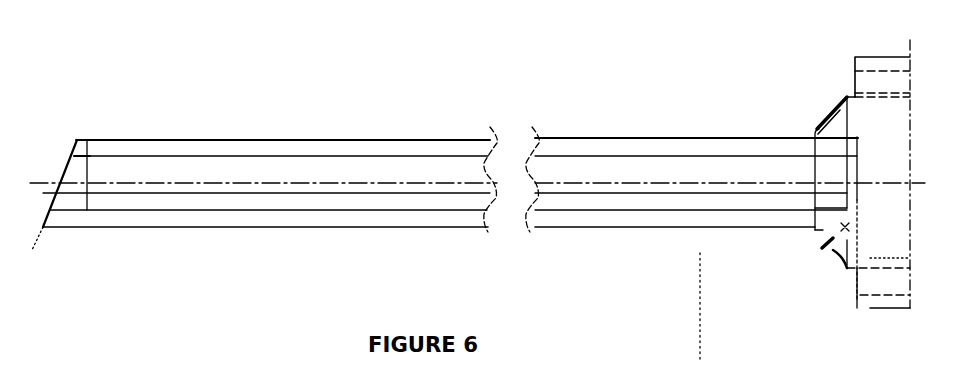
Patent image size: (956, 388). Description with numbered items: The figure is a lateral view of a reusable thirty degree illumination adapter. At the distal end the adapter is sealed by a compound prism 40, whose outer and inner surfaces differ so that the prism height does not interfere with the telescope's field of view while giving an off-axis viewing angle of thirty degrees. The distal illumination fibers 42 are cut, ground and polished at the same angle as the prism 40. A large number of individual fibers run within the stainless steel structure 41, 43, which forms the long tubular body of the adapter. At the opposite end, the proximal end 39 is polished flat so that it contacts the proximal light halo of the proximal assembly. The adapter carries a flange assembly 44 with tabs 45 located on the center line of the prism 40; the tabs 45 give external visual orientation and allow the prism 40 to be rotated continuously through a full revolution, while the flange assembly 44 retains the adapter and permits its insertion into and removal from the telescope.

The proximal end 39 is at (855, 208).
The prism 40 is at (76, 178).
The stainless steel structure 41 is at (198, 139).
The distal illumination fibers 42 is at (296, 148).
The stainless steel structure 43 is at (638, 155).
The flange assembly 44 is at (823, 117).
The tabs 45 is at (882, 267).